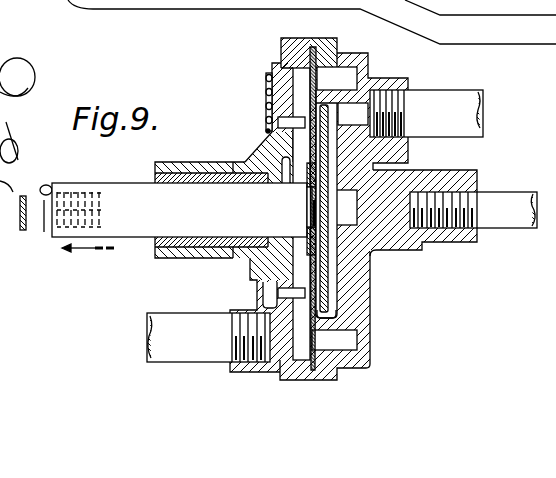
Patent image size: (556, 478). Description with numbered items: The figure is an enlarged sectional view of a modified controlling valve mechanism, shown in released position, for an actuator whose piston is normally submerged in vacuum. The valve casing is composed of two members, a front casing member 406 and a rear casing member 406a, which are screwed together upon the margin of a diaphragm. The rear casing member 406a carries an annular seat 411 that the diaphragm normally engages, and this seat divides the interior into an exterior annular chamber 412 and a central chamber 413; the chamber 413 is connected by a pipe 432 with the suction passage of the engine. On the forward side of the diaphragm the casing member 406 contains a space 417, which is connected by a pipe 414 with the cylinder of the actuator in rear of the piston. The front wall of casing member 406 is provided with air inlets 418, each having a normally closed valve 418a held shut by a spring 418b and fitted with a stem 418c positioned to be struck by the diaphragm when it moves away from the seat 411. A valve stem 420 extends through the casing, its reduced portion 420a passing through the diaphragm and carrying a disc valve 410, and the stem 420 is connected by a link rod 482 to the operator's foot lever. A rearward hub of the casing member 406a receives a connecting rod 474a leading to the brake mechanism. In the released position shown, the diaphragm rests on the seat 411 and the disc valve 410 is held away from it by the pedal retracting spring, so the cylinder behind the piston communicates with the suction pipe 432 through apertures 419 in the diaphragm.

The casing member 406 is at (283, 40).
The casing member 406a is at (368, 72).
The annular seat 411 is at (313, 92).
The pipe 432 is at (476, 123).
The reduced portion 420a is at (392, 171).
The connecting rod 474a is at (527, 222).
The apertures 419 is at (370, 268).
The disc valve 410 is at (327, 288).
The chamber 413 is at (332, 308).
The annular chamber 412 is at (346, 343).
The pipe 414 is at (185, 352).
The space 417 is at (290, 268).
The valve stem 420 is at (142, 238).
The link rod 482 is at (44, 198).
The air inlets 418 is at (268, 94).
The valve 418a is at (267, 131).
The spring 418b is at (268, 113).
The stem 418c is at (273, 70).